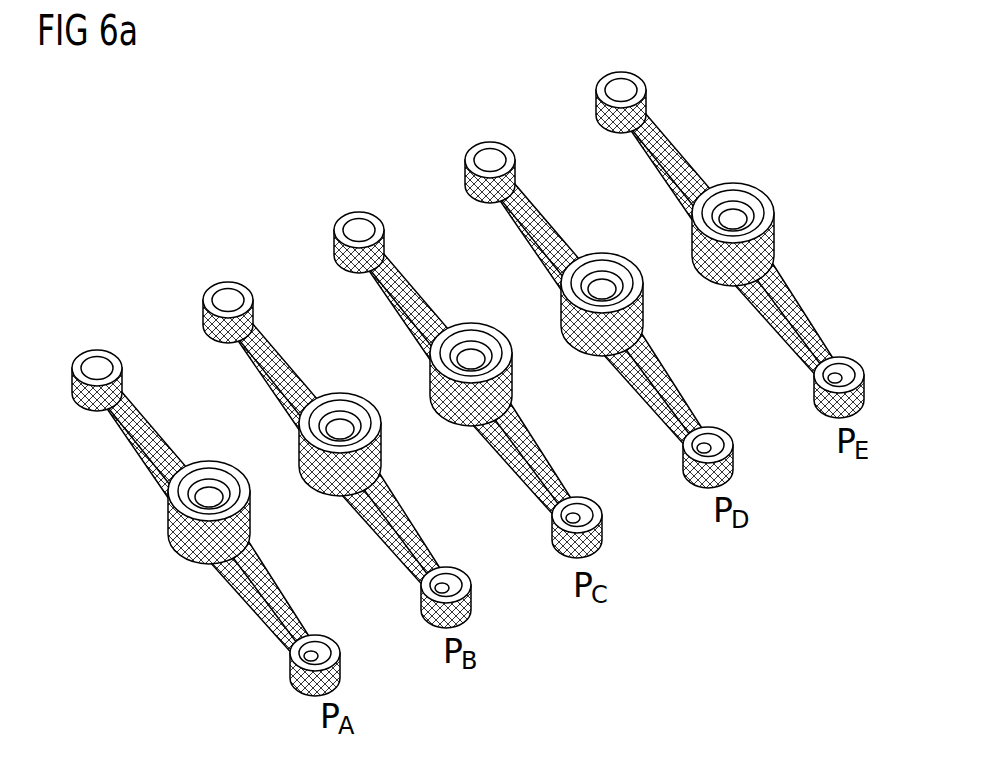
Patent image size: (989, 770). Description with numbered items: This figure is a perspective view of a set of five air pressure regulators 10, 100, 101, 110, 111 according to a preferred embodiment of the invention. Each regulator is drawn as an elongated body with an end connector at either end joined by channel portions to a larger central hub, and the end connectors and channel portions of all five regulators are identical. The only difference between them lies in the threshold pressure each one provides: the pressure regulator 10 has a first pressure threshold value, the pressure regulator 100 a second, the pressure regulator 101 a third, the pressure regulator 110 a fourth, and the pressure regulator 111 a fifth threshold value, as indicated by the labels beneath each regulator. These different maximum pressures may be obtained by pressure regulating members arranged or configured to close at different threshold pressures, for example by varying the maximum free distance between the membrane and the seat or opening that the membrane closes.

The air pressure regulator 10 is at (186, 490).
The air pressure regulator 100 is at (316, 422).
The air pressure regulator 101 is at (448, 352).
The air pressure regulator 110 is at (575, 284).
The air pressure regulator 111 is at (710, 212).